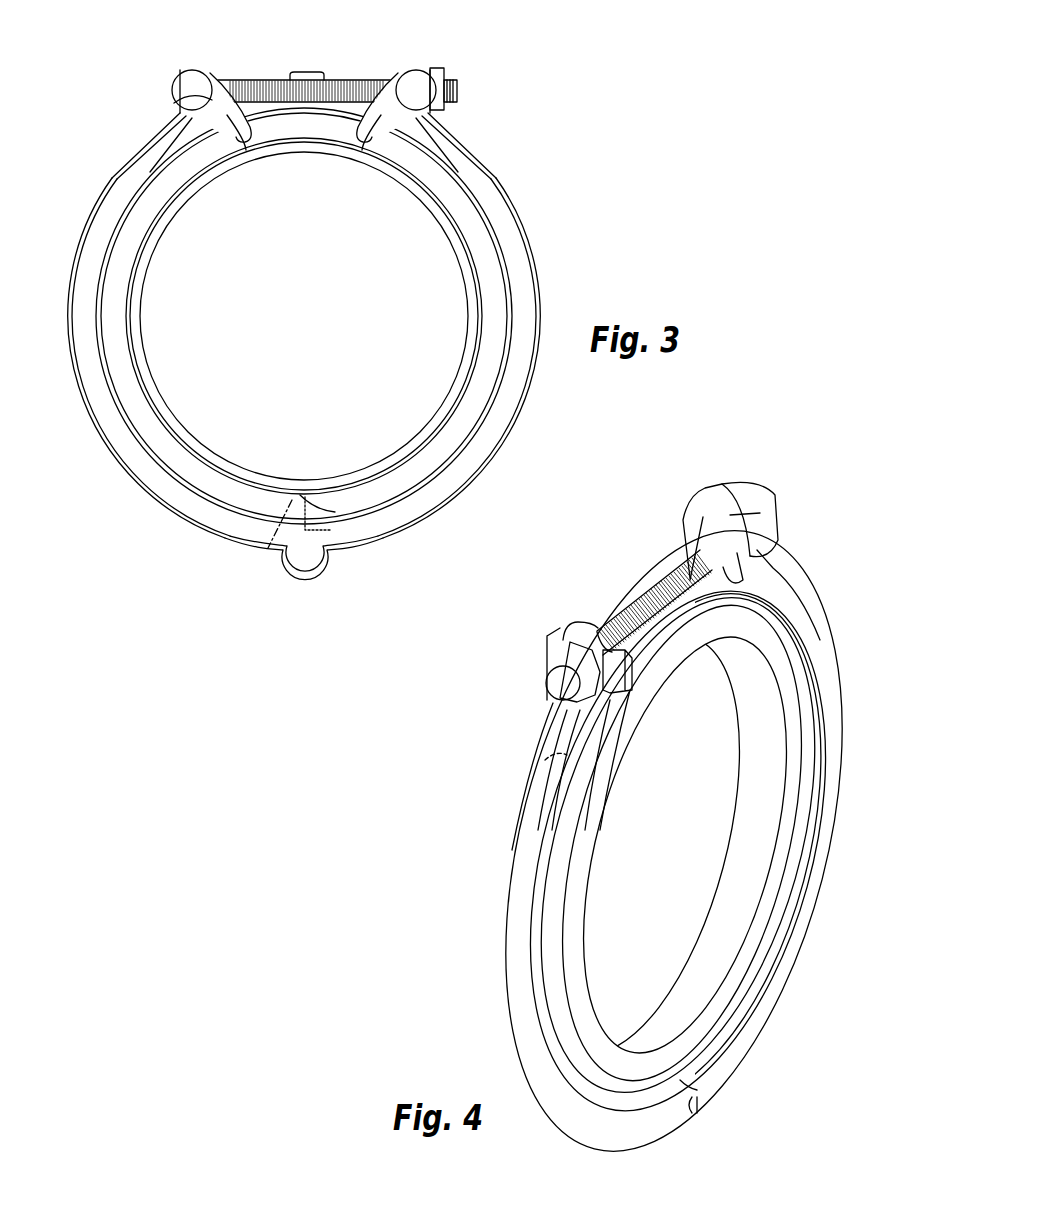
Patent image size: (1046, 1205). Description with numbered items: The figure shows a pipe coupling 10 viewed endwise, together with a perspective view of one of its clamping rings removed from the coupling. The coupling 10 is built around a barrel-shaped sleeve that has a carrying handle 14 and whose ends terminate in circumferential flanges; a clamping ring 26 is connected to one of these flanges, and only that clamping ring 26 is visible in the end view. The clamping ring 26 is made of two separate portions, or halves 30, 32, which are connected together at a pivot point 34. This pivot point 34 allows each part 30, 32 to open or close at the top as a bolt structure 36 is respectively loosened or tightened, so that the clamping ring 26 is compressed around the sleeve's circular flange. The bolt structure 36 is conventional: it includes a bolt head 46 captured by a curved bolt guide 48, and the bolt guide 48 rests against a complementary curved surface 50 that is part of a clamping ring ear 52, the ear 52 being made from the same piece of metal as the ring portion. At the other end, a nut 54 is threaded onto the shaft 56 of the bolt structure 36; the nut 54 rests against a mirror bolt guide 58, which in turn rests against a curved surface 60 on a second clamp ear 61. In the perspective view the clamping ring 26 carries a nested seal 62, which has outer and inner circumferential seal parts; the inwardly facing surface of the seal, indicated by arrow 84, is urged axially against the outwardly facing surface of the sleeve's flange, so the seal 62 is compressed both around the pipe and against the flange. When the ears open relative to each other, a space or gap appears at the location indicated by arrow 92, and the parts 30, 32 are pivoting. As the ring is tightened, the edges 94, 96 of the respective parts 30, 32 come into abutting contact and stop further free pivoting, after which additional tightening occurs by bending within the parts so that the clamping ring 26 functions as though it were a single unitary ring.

In FIG. 3, the pipe coupling 10 is at (602, 146).
In FIG. 3, the carrying handle 14 is at (298, 70).
In FIG. 3, the clamping ring 26 is at (470, 485).
In FIG. 4, the clamping ring 26 is at (829, 618).
In FIG. 3, the clamping ring portion 30 is at (165, 505).
In FIG. 4, the clamping ring portion 30 is at (805, 905).
In FIG. 3, the clamping ring portion 32 is at (528, 232).
In FIG. 4, the clamping ring portion 32 is at (565, 1030).
In FIG. 3, the pivot point 34 is at (320, 540).
In FIG. 3, the bolt structure 36 is at (348, 80).
In FIG. 4, the bolt structure 36 is at (609, 612).
In FIG. 3, the bolt head 46 is at (174, 96).
In FIG. 4, the bolt head 46 is at (745, 495).
In FIG. 3, the bolt guide 48 is at (188, 83).
In FIG. 3, the curved surface 50 is at (178, 102).
In FIG. 3, the clamping ring ear 52 is at (246, 150).
In FIG. 3, the nut 54 is at (445, 72).
In FIG. 4, the nut 54 is at (553, 670).
In FIG. 4, the shaft 56 is at (655, 590).
In FIG. 3, the bolt guide 58 is at (414, 85).
In FIG. 4, the bolt guide 58 is at (625, 668).
In FIG. 3, the curved surface 60 is at (450, 104).
In FIG. 3, the clamp ear 61 is at (362, 150).
In FIG. 4, the nested seal 62 is at (760, 886).
In FIG. 4, the inwardly facing surface of the seal 84 is at (690, 1077).
In FIG. 3, the gap 92 is at (303, 490).
In FIG. 4, the gap 92 is at (697, 1128).
In FIG. 4, the edge 94 is at (697, 1110).
In FIG. 3, the edge 96 is at (312, 515).